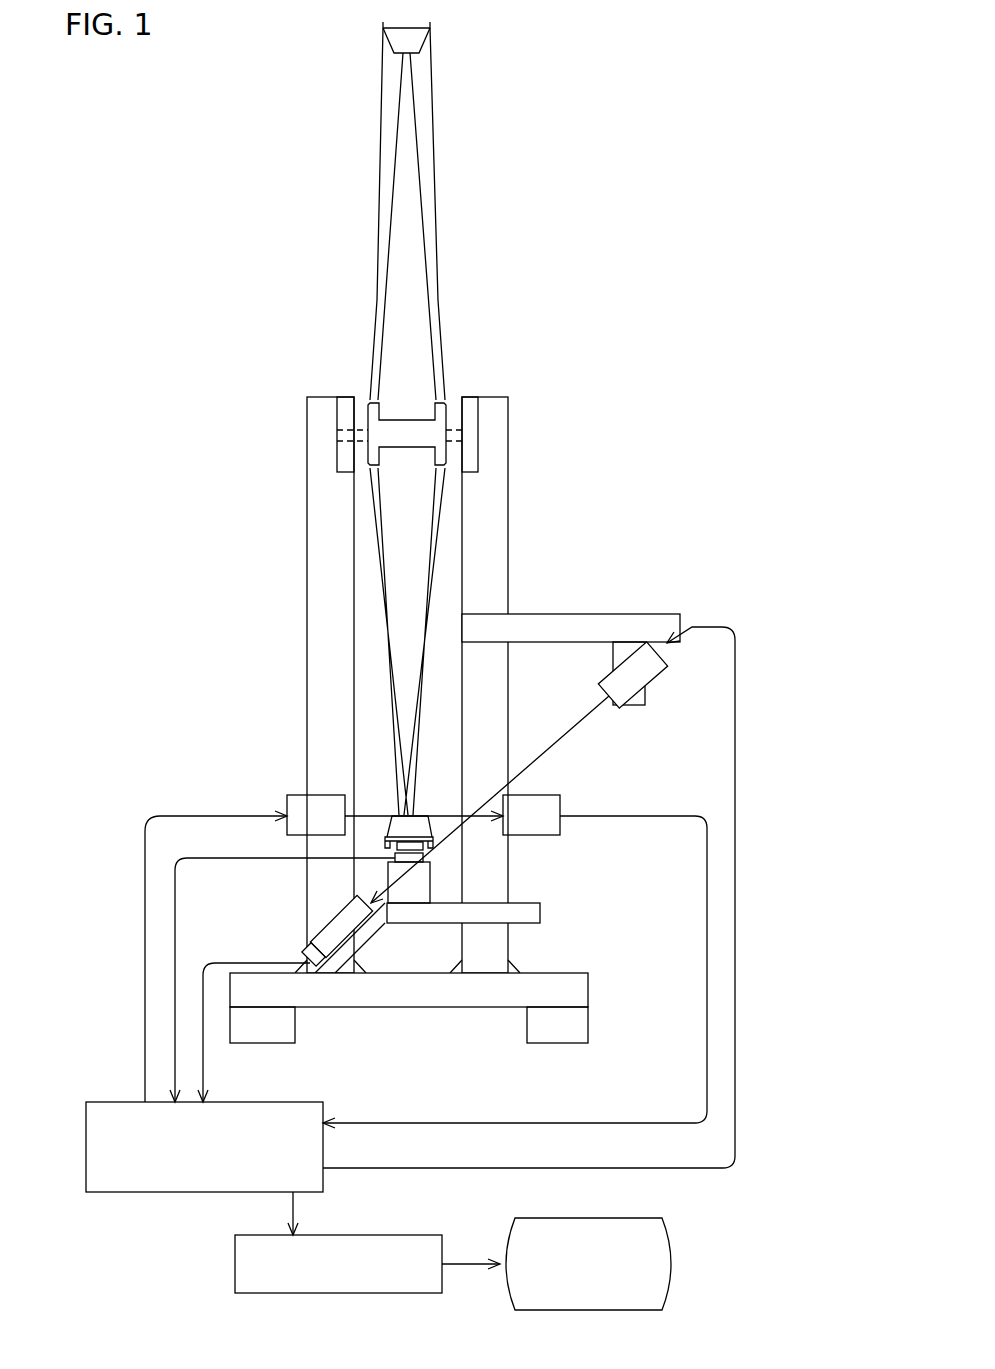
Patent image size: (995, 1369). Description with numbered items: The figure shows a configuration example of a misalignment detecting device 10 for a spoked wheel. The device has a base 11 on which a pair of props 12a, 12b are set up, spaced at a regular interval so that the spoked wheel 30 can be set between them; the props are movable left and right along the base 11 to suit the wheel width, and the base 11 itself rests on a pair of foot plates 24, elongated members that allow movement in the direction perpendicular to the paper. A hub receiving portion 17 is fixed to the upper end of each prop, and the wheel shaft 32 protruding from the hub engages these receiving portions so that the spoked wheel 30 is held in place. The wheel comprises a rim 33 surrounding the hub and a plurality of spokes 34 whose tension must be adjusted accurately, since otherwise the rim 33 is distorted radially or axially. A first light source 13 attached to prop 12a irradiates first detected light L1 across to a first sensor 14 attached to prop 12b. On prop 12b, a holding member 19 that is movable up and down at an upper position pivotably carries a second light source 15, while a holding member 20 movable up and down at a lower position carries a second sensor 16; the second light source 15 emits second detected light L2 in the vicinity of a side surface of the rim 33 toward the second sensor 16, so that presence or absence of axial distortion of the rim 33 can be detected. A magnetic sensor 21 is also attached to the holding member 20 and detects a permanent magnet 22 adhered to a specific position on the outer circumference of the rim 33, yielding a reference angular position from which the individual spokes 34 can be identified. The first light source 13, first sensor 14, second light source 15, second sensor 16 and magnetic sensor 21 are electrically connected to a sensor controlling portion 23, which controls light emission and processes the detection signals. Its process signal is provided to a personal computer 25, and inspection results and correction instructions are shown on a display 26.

The misalignment detecting device 10 is at (260, 497).
The base 11 is at (570, 973).
The prop 12a is at (322, 689).
The prop 12b is at (498, 668).
The first light source 13 is at (296, 805).
The first sensor 14 is at (560, 805).
The second light source 15 is at (653, 672).
The second sensor 16 is at (330, 922).
The hub receiving portion 17 is at (337, 413).
The holding member 19 is at (622, 650).
The holding member 20 is at (428, 925).
The magnetic sensor 21 is at (407, 862).
The permanent magnet 22 is at (422, 846).
The sensor controlling portion 23 is at (158, 1192).
The foot plate 24 is at (295, 1027).
The personal computer 25 is at (383, 1235).
The display 26 is at (677, 1250).
The spoked wheel 30 is at (452, 203).
The wheel shaft 32 is at (362, 418).
The rim 33 is at (413, 40).
The spoke 34 is at (382, 255).
The first detected light L1 is at (377, 813).
The second detected light L2 is at (543, 753).